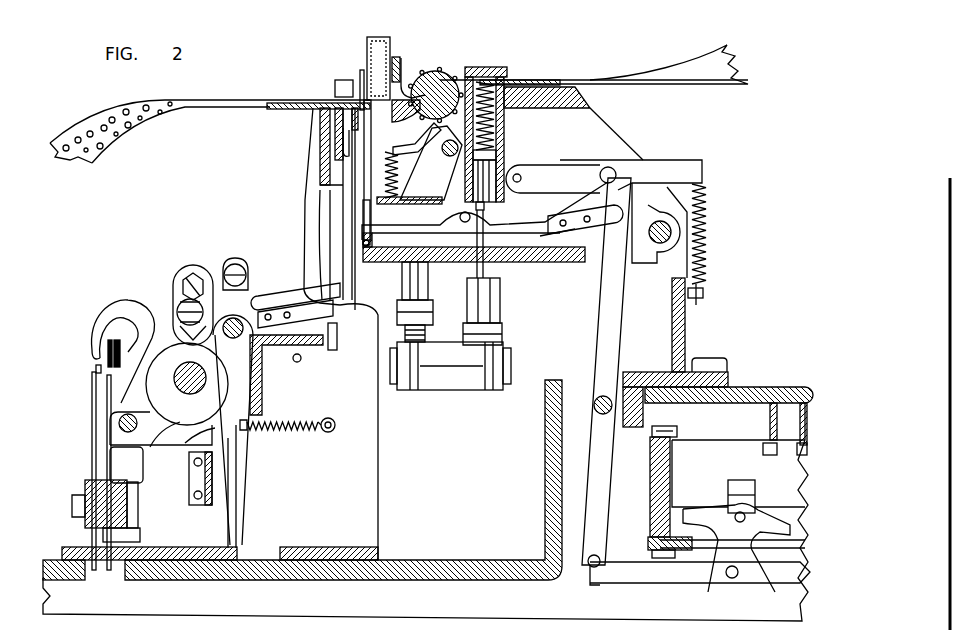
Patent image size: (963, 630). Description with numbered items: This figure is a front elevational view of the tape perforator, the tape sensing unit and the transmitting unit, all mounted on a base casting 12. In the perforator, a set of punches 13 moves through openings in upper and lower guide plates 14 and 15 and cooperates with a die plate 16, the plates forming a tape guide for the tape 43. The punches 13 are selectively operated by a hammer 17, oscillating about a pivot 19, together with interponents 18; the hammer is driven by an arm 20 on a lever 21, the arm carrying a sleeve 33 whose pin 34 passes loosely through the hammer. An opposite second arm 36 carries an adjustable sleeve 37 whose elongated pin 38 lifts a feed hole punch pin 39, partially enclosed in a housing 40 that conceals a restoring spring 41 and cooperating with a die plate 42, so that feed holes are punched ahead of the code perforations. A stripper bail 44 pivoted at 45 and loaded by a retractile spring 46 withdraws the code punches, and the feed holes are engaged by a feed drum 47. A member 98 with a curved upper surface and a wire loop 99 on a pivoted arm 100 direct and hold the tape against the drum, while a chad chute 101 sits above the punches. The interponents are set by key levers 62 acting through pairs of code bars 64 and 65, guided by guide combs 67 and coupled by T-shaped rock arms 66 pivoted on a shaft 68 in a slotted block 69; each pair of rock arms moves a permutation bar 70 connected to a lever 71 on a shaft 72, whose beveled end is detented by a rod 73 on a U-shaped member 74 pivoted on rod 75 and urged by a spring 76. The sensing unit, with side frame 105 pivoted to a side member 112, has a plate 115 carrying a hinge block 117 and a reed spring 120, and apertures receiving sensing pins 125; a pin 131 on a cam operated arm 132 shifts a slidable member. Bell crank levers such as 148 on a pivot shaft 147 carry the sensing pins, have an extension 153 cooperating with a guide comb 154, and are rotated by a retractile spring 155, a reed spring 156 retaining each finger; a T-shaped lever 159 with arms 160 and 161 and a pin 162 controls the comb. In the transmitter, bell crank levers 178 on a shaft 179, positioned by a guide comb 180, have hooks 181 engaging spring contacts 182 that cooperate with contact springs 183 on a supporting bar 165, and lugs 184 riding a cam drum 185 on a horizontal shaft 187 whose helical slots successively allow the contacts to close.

The base casting 12 is at (232, 578).
The punches 13 is at (341, 102).
The upper guide plate 14 is at (373, 112).
The lower guide plate 15 is at (369, 198).
The die plate 16 is at (382, 97).
The hammer 17 is at (367, 262).
The interponents 18 is at (590, 232).
The pivot 19 is at (663, 237).
The arm 20 is at (417, 390).
The lever 21 is at (455, 390).
The sleeve 33 is at (418, 292).
The pin 34 is at (413, 255).
The second arm 36 is at (488, 360).
The adjustable sleeve 37 is at (495, 315).
The elongated pin 38 is at (512, 240).
The punch pin 39 is at (490, 165).
The housing 40 is at (504, 138).
The spring 41 is at (548, 87).
The die plate 42 is at (490, 67).
The tape 43 is at (735, 70).
The stripper bail 44 is at (410, 152).
The pivot 45 is at (468, 90).
The retractile spring 46 is at (454, 162).
The feed drum 47 is at (441, 72).
The key levers 62 is at (772, 430).
The code bar 64 is at (683, 487).
The code bar 65 is at (802, 430).
The rock arm 66 is at (725, 543).
The guide comb 67 is at (652, 465).
The shaft 68 is at (743, 522).
The block 69 is at (740, 490).
The permutation bar 70 is at (612, 583).
The lever 71 is at (600, 350).
The shaft 72 is at (593, 407).
The rod 73 is at (612, 170).
The U-shaped member 74 is at (668, 160).
The rod 75 is at (522, 180).
The spring 76 is at (706, 232).
The member 98 is at (418, 99).
The wire loop 99 is at (402, 57).
The arm 100 is at (394, 57).
The chad chute 101 is at (374, 45).
The frame 105 is at (322, 118).
The side member 112 is at (362, 493).
The plate 115 is at (270, 108).
The hinge block 117 is at (318, 63).
The reed spring 120 is at (336, 90).
The sensing pin 125 is at (318, 245).
The pin 131 is at (340, 135).
The cam operated arm 132 is at (310, 197).
The pivot shaft 147 is at (240, 320).
The bell crank lever 148 is at (247, 430).
The extension 153 is at (337, 345).
The guide comb 154 is at (262, 385).
The retractile spring 155 is at (285, 432).
The reed spring 156 is at (310, 318).
The T-shaped lever 159 is at (226, 368).
The arm 160 is at (237, 432).
The arm 161 is at (283, 312).
The pin 162 is at (298, 363).
The supporting bar 165 is at (130, 520).
The bell crank lever 178 is at (157, 452).
The shaft 179 is at (128, 433).
The guide comb 180 is at (213, 472).
The hook 181 is at (95, 325).
The spring contact 182 is at (107, 400).
The contact spring 183 is at (92, 443).
The lug 184 is at (172, 440).
The cam drum 185 is at (160, 350).
The horizontal shaft 187 is at (182, 392).